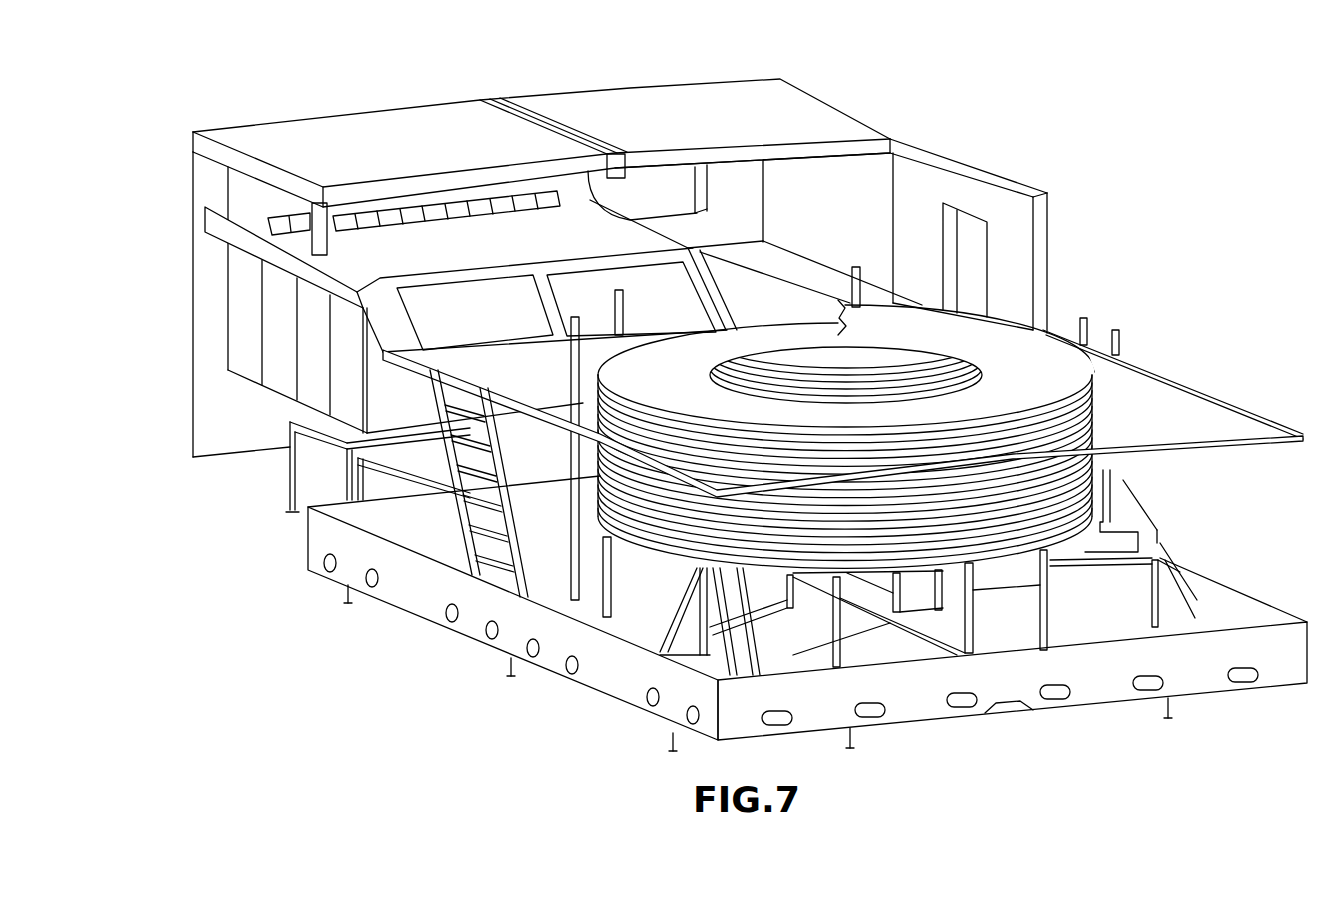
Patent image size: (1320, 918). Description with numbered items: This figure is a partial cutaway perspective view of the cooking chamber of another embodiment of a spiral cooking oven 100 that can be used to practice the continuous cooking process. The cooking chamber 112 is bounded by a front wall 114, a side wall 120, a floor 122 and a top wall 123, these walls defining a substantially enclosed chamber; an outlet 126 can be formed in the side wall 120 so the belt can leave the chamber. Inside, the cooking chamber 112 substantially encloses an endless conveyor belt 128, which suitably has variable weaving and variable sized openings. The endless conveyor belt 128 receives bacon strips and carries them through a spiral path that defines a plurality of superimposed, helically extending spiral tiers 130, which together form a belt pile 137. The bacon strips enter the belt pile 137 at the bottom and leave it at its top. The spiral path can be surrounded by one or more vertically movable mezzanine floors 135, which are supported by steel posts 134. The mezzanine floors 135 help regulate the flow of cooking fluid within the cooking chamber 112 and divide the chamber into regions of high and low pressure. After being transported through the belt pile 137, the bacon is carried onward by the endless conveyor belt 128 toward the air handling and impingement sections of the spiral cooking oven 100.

The spiral cooking oven 100 is at (866, 100).
The cooking chamber 112 is at (1007, 177).
The front wall 114 is at (1010, 228).
The side wall 120 is at (703, 236).
The floor 122 is at (623, 638).
The top wall 123 is at (790, 160).
The outlet 126 is at (622, 195).
The endless conveyor belt 128 is at (1037, 351).
The spiral tiers 130 is at (623, 424).
The steel posts 134 is at (1090, 328).
The mezzanine floors 135 is at (1183, 410).
The belt pile 137 is at (1087, 507).